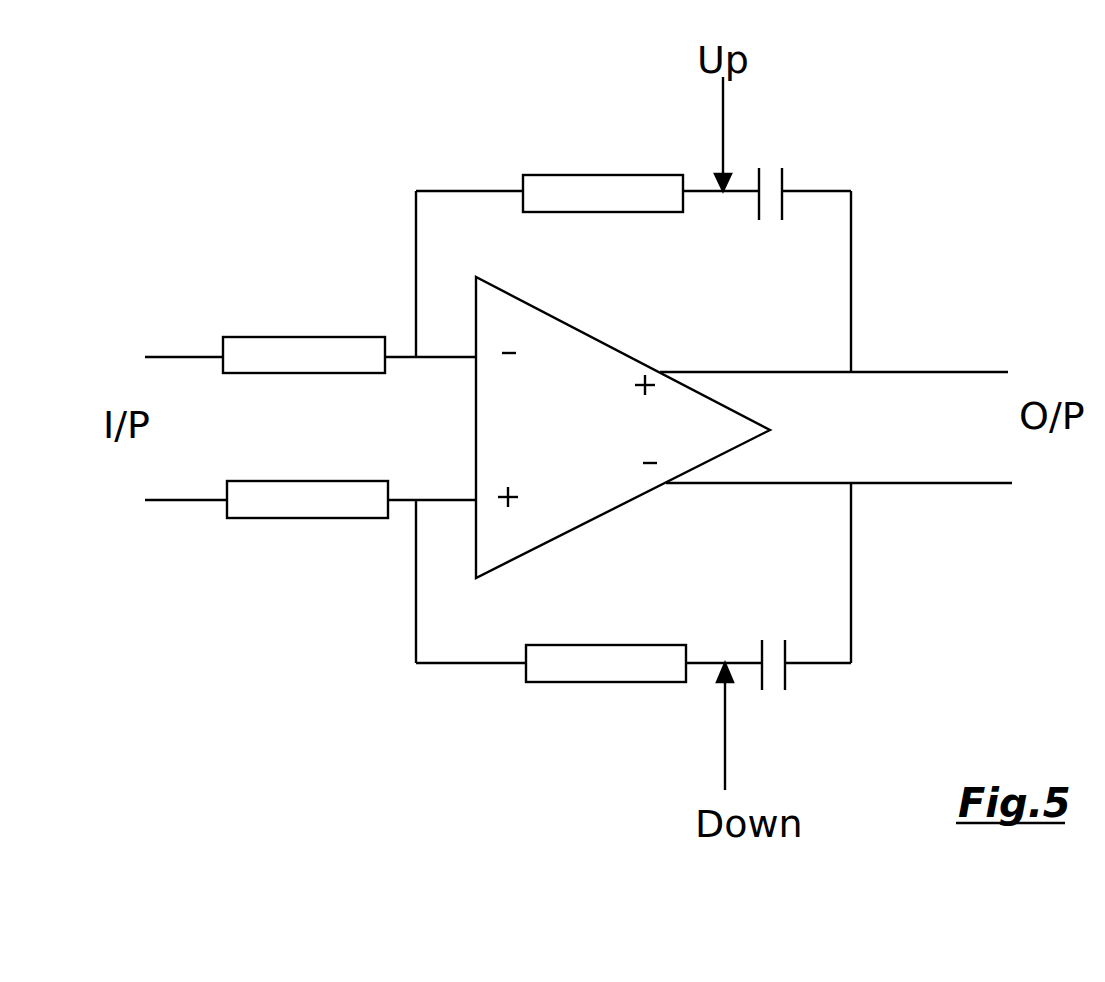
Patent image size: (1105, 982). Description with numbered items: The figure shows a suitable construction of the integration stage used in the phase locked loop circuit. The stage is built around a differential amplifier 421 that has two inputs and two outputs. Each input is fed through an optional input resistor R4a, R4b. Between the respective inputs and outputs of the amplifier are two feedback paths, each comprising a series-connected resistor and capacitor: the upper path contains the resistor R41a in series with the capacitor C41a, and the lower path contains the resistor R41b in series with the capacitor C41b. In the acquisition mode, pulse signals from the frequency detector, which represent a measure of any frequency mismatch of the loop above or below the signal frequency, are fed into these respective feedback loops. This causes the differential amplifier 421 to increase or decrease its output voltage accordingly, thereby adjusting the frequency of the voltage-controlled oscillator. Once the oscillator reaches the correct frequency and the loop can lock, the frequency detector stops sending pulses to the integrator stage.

The differential amplifier 421 is at (594, 337).
The input resistor R4a is at (304, 323).
The input resistor R4b is at (307, 464).
The feedback resistor R41a is at (603, 162).
The feedback resistor R41b is at (606, 635).
The feedback capacitor C41a is at (839, 169).
The feedback capacitor C41b is at (774, 639).